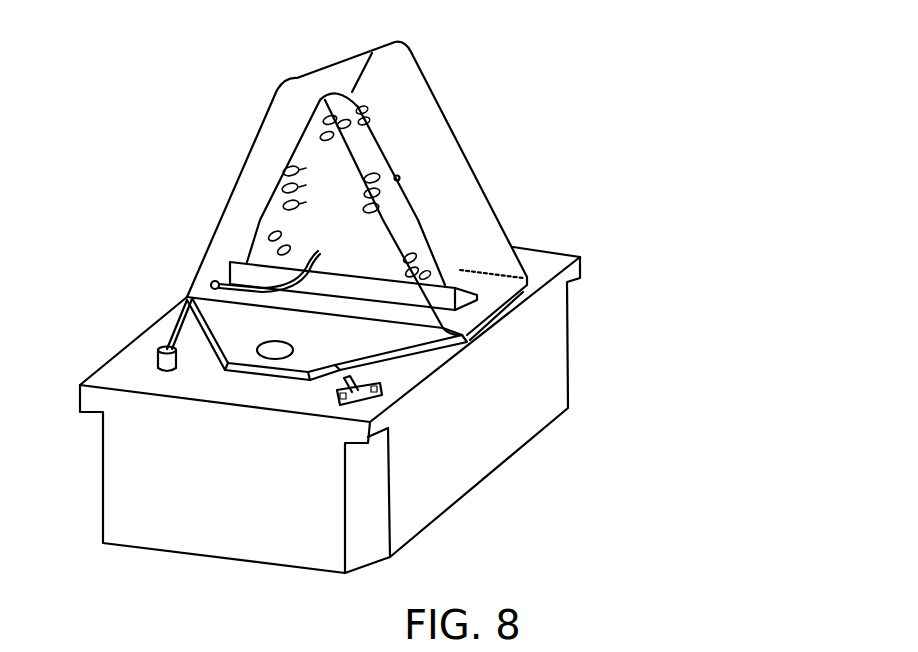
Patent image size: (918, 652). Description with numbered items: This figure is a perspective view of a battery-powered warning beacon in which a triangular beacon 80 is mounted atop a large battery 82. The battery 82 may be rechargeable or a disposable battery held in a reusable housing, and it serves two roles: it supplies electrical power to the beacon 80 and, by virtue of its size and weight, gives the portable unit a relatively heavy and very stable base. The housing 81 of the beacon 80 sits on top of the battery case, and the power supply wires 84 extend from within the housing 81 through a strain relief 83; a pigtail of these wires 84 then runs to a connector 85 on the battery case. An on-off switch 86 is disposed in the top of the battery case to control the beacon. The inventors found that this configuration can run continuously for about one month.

The triangular beacon 80 is at (530, 97).
The housing 81 is at (473, 202).
The large battery 82 is at (208, 507).
The strain relief 83 is at (212, 281).
The power supply wires 84 is at (180, 298).
The connector 85 is at (157, 360).
The on-off switch 86 is at (382, 395).